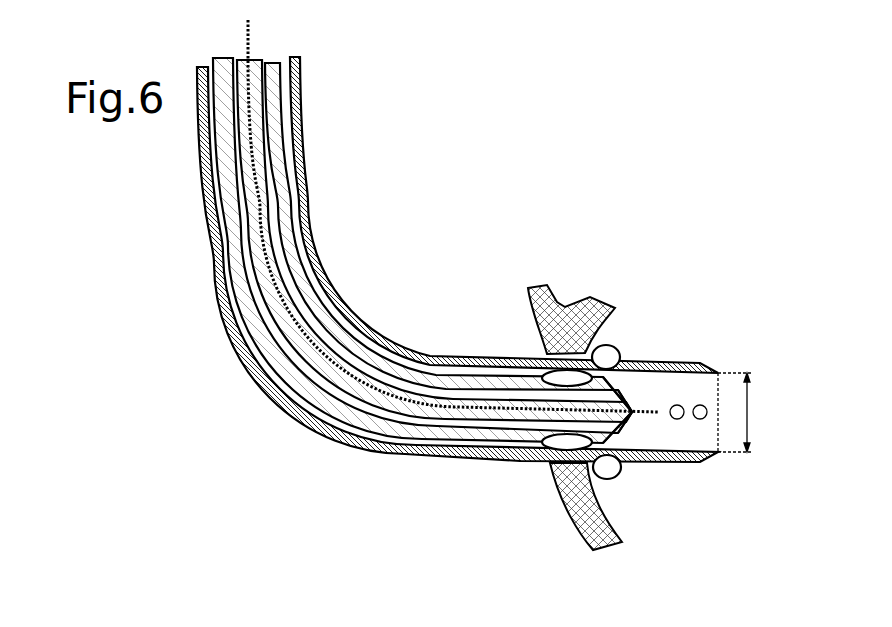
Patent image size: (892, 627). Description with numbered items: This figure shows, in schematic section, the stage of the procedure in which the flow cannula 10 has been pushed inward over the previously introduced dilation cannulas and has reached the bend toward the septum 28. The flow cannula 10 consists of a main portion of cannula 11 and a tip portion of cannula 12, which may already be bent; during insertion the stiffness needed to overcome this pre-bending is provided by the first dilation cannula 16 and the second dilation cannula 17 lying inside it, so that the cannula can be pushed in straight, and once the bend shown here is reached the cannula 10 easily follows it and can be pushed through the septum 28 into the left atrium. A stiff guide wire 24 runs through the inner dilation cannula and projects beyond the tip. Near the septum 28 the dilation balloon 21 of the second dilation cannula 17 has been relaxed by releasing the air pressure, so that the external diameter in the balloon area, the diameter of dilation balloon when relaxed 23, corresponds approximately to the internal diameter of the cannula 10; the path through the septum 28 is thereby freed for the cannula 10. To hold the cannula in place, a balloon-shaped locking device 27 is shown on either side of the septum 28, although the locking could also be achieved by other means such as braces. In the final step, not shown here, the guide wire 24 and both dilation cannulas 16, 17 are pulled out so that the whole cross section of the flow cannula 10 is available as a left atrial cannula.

The flow cannula 10 is at (302, 106).
The main portion of cannula 11 is at (308, 159).
The tip portion of cannula 12 is at (477, 350).
The first dilation cannula 16 is at (268, 262).
The second dilation cannula 17 is at (275, 363).
The dilation balloon 21 is at (563, 442).
The diameter of dilation balloon when relaxed 23 is at (752, 412).
The stiff guide wire 24 is at (650, 410).
The locking device 27 is at (607, 356).
The septum 28 is at (561, 350).